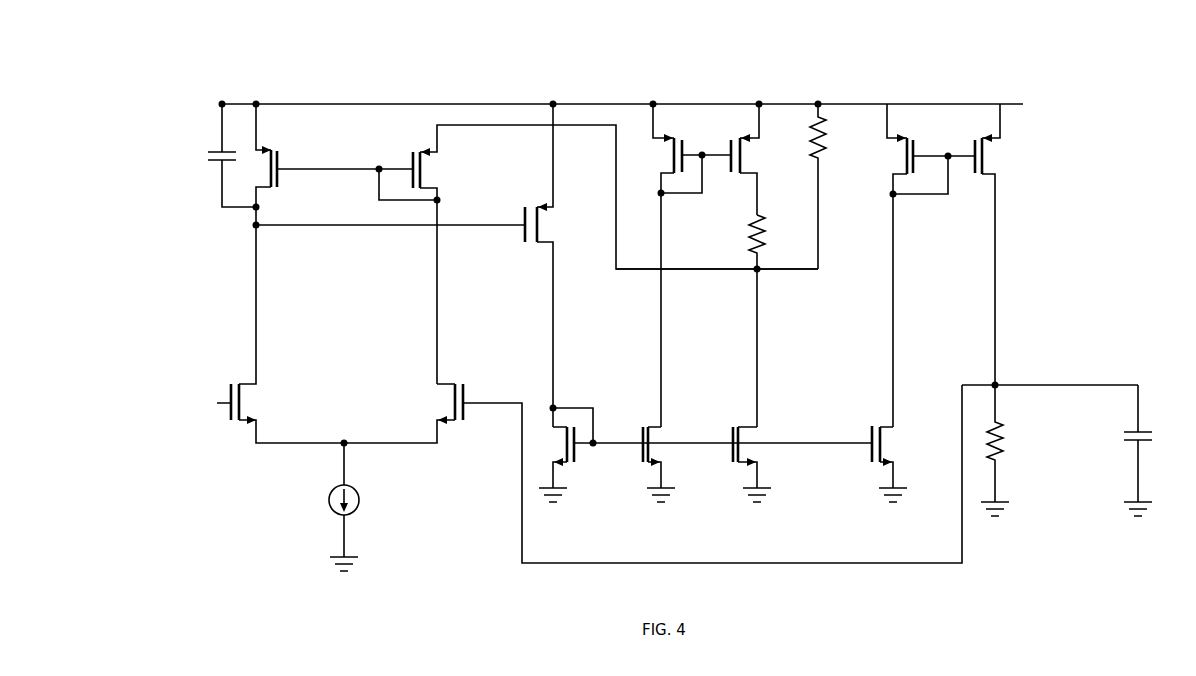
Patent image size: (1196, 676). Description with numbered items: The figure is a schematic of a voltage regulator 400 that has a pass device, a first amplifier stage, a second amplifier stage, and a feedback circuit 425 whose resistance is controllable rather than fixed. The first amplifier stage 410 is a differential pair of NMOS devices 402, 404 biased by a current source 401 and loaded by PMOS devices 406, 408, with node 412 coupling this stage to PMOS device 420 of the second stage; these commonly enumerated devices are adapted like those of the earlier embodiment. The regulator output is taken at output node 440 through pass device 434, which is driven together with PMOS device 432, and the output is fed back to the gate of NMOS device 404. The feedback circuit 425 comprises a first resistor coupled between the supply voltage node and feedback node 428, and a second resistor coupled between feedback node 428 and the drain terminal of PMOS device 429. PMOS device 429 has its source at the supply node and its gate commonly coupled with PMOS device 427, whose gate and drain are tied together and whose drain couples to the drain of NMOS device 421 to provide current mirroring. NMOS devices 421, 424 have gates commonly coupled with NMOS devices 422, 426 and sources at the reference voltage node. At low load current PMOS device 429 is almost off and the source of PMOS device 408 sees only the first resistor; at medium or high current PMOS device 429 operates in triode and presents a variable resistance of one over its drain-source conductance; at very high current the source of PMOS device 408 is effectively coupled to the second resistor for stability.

The voltage regulator 400 is at (243, 50).
The current source 401 is at (329, 500).
The NMOS device 402 is at (268, 334).
The NMOS device 404 is at (653, 473).
The PMOS device 406 is at (308, 164).
The PMOS device 408 is at (597, 254).
The first amplifier stage 410 is at (350, 340).
The node 412 is at (253, 228).
The PMOS device 420 is at (550, 265).
The NMOS device 421 is at (661, 464).
The NMOS device 422 is at (705, 454).
The NMOS device 424 is at (754, 464).
The feedback circuit 425 is at (803, 237).
The NMOS device 426 is at (892, 464).
The PMOS device 427 is at (686, 265).
The feedback node 428 is at (760, 272).
The PMOS device 429 is at (754, 159).
The PMOS device 432 is at (924, 265).
The pass device 434 is at (996, 244).
The output node 440 is at (993, 383).